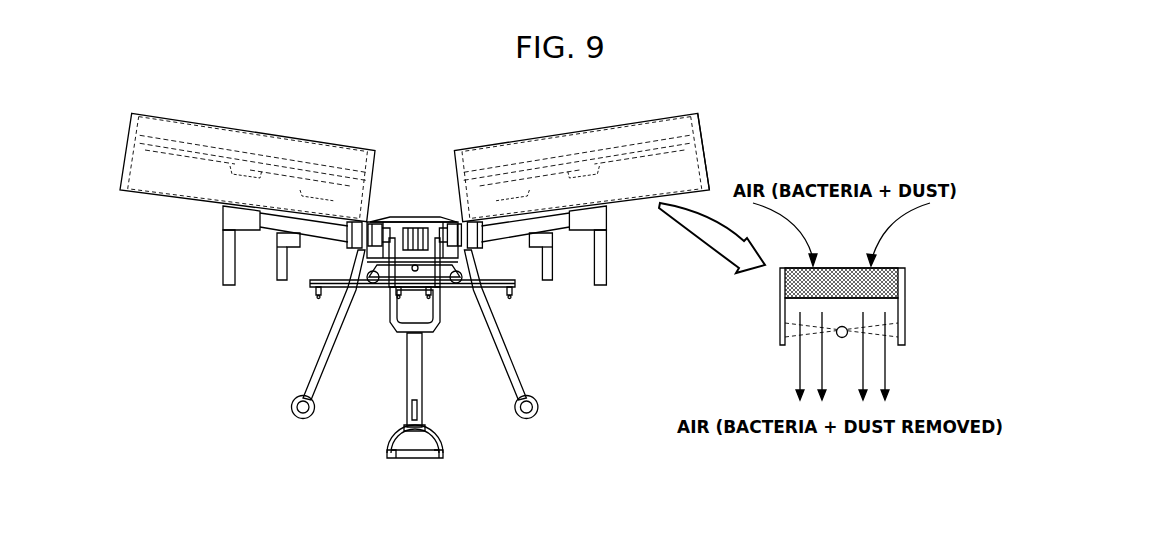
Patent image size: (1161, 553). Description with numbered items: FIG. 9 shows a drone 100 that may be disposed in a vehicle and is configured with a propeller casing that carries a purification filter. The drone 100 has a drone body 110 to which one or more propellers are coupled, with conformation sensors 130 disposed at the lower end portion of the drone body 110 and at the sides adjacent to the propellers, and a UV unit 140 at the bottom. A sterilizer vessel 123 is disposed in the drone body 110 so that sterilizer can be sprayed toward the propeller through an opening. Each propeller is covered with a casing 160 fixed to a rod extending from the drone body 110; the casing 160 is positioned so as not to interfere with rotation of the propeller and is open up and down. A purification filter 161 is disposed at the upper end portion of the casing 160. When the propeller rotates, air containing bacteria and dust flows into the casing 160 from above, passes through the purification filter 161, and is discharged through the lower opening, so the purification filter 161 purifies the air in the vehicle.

The drone 100 is at (313, 120).
The drone body 110 is at (413, 221).
The sterilizer vessel 123 is at (424, 312).
The conformation sensors 130 is at (560, 392).
The UV unit 140 is at (437, 437).
The casing 160 is at (703, 134).
The purification filter 161 is at (787, 287).